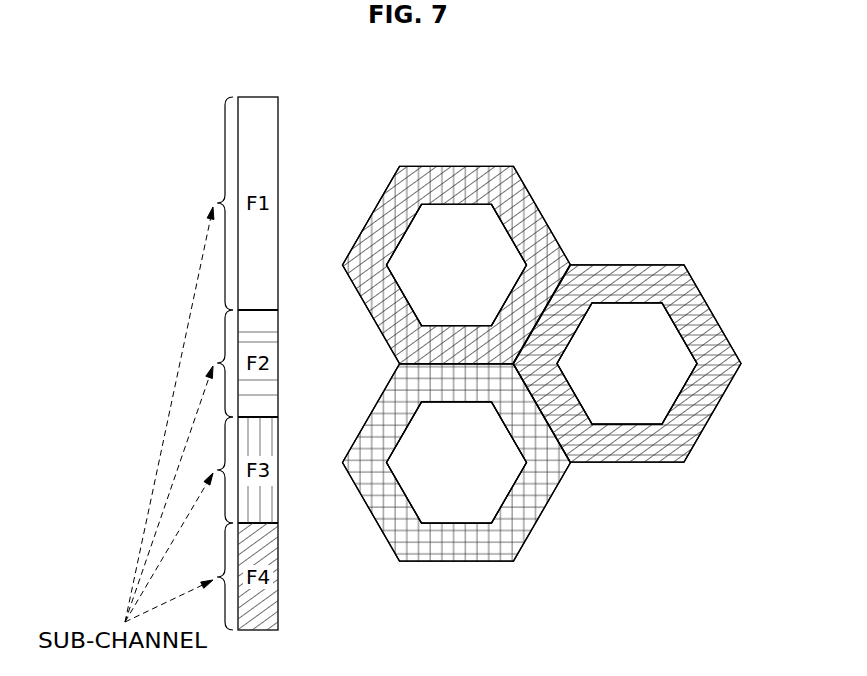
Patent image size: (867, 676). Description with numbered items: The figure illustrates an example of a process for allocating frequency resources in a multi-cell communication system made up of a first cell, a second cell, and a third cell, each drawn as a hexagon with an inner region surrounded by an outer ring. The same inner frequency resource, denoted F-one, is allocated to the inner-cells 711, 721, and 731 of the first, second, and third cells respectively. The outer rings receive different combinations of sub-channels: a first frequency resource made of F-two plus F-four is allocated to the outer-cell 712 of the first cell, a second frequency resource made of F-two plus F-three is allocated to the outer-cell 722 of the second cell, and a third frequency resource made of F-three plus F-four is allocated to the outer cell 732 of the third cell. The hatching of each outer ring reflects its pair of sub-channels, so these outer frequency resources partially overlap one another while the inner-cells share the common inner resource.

The inner-cell of the first cell 711 is at (668, 345).
The outer-cell of the first cell 712 is at (627, 272).
The inner-cell of the second cell 721 is at (455, 487).
The outer-cell of the second cell 722 is at (518, 512).
The inner-cell of the third cell 731 is at (480, 235).
The outer cell of the third cell 732 is at (460, 172).